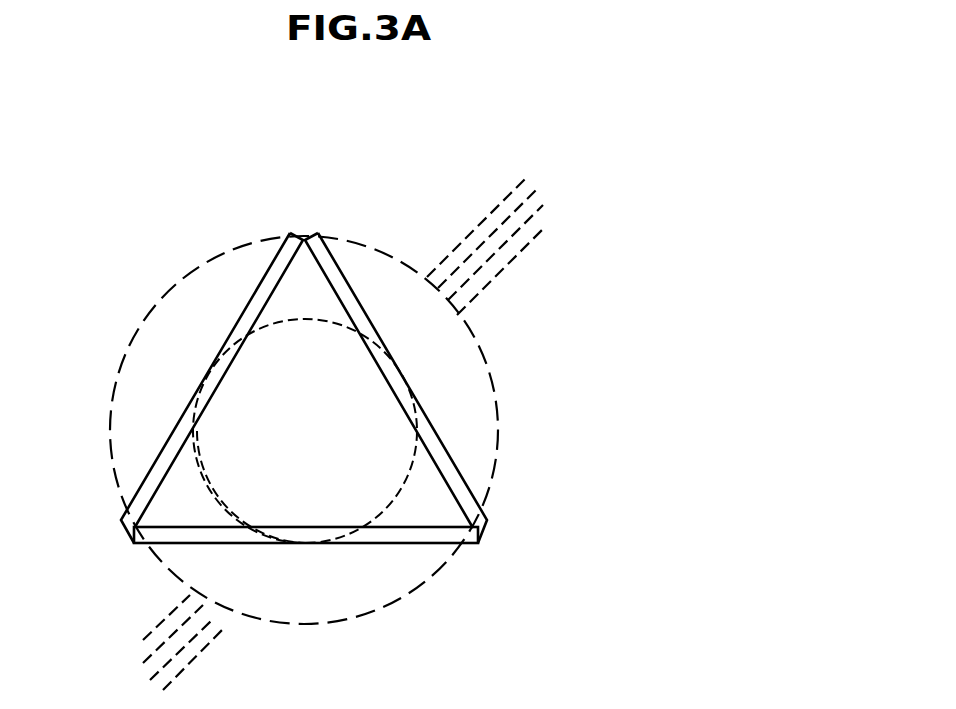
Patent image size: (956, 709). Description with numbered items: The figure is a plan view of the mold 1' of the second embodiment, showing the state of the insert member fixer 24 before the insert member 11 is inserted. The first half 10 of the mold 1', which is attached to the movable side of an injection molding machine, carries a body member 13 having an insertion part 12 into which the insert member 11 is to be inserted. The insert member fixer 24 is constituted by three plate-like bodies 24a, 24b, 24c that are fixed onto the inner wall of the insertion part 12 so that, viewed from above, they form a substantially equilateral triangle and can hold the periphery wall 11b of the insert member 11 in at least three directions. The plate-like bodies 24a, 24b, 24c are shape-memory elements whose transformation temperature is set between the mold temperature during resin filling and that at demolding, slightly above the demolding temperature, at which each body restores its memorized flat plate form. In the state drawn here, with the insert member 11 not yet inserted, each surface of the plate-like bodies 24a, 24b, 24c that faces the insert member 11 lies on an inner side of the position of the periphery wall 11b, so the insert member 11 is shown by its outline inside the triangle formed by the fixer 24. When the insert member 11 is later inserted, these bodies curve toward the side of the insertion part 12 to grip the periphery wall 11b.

The mold 1' is at (587, 218).
The first half 10 is at (535, 266).
The insert member 11 is at (398, 494).
The periphery wall 11b is at (196, 459).
The insertion part 12 is at (247, 268).
The body member 13 is at (386, 228).
The insert member fixer 24 is at (586, 295).
The plate-like body 24a is at (363, 323).
The plate-like body 24b is at (218, 370).
The plate-like body 24c is at (308, 530).